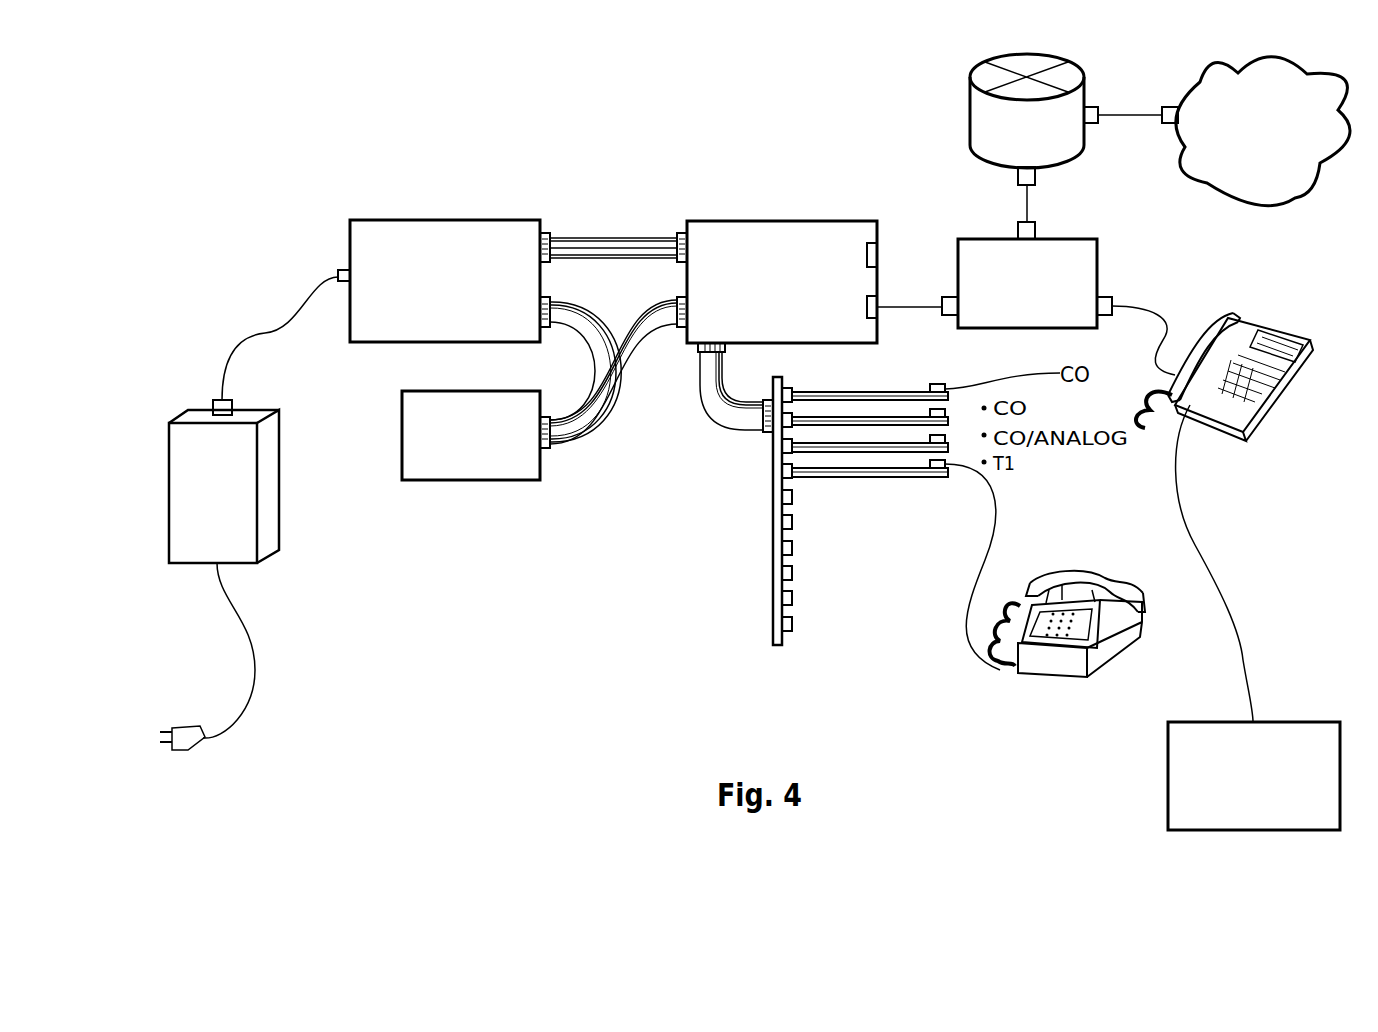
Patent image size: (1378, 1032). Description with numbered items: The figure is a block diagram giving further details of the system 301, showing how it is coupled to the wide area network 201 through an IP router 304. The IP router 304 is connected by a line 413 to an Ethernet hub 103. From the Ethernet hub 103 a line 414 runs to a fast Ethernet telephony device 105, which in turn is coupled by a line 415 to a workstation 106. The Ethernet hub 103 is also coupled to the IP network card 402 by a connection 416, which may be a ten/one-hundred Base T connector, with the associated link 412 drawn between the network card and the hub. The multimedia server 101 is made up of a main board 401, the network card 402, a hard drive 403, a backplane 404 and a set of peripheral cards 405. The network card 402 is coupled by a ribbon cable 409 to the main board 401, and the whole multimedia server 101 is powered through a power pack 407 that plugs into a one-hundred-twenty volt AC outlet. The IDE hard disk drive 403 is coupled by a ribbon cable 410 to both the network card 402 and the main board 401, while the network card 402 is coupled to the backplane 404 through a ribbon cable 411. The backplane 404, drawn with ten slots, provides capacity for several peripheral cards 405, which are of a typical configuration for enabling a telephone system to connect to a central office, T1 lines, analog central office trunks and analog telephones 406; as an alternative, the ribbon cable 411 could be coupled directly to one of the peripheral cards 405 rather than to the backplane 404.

The multimedia server 101 is at (545, 426).
The Ethernet hub 103 is at (1078, 240).
The fast Ethernet telephony device 105 is at (1218, 430).
The workstation 106 is at (1245, 831).
The wide area network 201 is at (1213, 192).
The system 301 is at (588, 710).
The IP router 304 is at (970, 118).
The main board 401 is at (430, 220).
The network card 402 is at (802, 270).
The hard drive 403 is at (465, 481).
The backplane 404 is at (773, 595).
The peripheral cards 405 is at (867, 427).
The analog telephones 406 is at (1058, 680).
The power pack 407 is at (290, 466).
The ribbon cable 409 is at (597, 236).
The ribbon cable 410 is at (570, 440).
The ribbon cable 411 is at (728, 388).
The ethernet connection to hub 412 is at (915, 307).
The line 413 is at (1026, 208).
The line 414 is at (1140, 310).
The line 415 is at (1236, 647).
The connection 416 is at (878, 309).